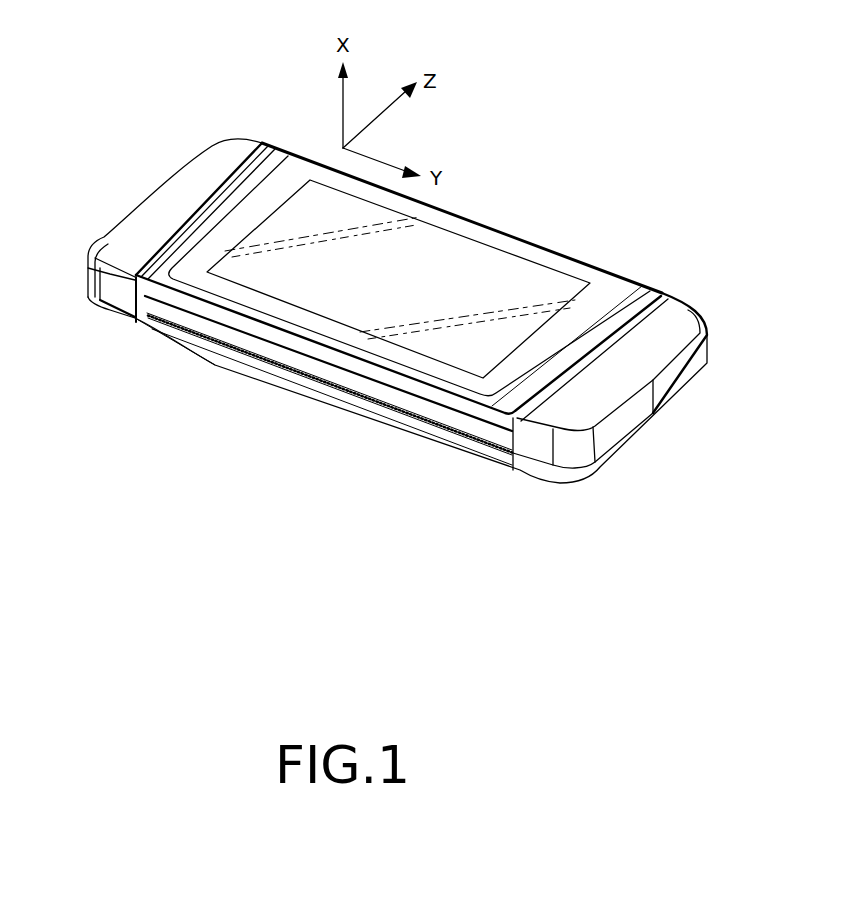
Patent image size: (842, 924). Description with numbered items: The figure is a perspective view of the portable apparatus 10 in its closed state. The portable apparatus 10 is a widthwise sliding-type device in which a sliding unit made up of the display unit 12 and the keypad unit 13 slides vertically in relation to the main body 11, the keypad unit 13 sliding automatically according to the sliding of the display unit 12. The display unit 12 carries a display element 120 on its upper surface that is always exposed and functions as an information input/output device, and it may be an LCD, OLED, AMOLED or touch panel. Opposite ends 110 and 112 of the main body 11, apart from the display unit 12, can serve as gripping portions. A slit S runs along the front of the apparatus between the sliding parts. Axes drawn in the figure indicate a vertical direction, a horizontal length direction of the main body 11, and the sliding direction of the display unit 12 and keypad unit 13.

The portable apparatus 10 is at (196, 73).
The end of main body 112 is at (150, 213).
The display unit 12 is at (510, 220).
The display 120 is at (552, 282).
The end of main body 110 is at (677, 316).
The main body 11 is at (205, 373).
The keypad unit 13 is at (380, 405).
The slit S is at (428, 425).